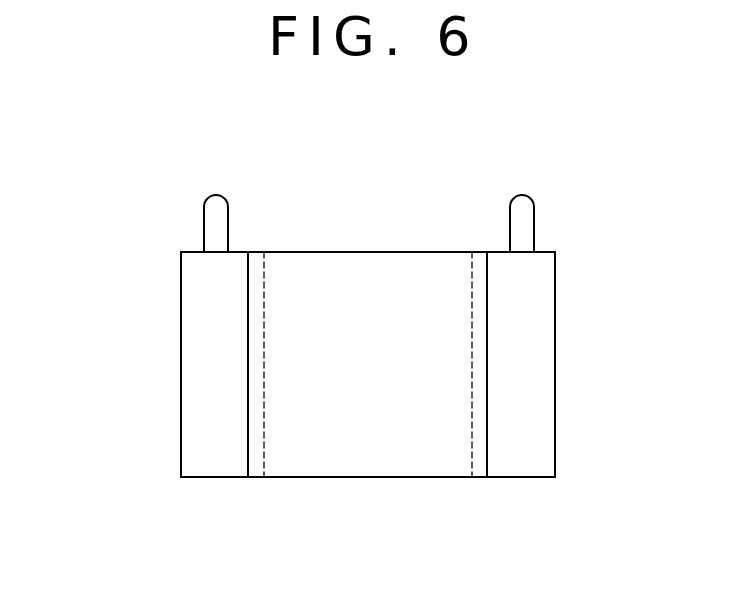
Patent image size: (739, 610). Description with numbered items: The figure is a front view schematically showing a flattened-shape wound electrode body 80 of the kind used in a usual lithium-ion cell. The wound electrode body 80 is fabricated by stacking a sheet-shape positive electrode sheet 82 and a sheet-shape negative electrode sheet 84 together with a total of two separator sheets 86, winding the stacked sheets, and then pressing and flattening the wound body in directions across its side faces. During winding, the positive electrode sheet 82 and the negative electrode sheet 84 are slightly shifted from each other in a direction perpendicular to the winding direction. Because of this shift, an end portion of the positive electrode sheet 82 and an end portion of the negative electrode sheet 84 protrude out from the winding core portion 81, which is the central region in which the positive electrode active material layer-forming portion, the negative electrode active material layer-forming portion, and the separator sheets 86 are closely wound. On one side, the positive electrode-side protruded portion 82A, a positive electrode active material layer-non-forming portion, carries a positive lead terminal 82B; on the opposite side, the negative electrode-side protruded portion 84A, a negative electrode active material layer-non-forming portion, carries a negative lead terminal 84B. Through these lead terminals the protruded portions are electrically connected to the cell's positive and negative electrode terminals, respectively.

The wound electrode body 80 is at (418, 244).
The winding core portion 81 is at (430, 462).
The positive electrode sheet 82 is at (556, 310).
The positive electrode-side protruded portion 82A is at (540, 412).
The positive lead terminal 82B is at (534, 218).
The negative electrode sheet 84 is at (182, 300).
The negative electrode-side protruded portion 84A is at (196, 407).
The negative lead terminal 84B is at (228, 218).
The separator sheet 86 is at (330, 273).